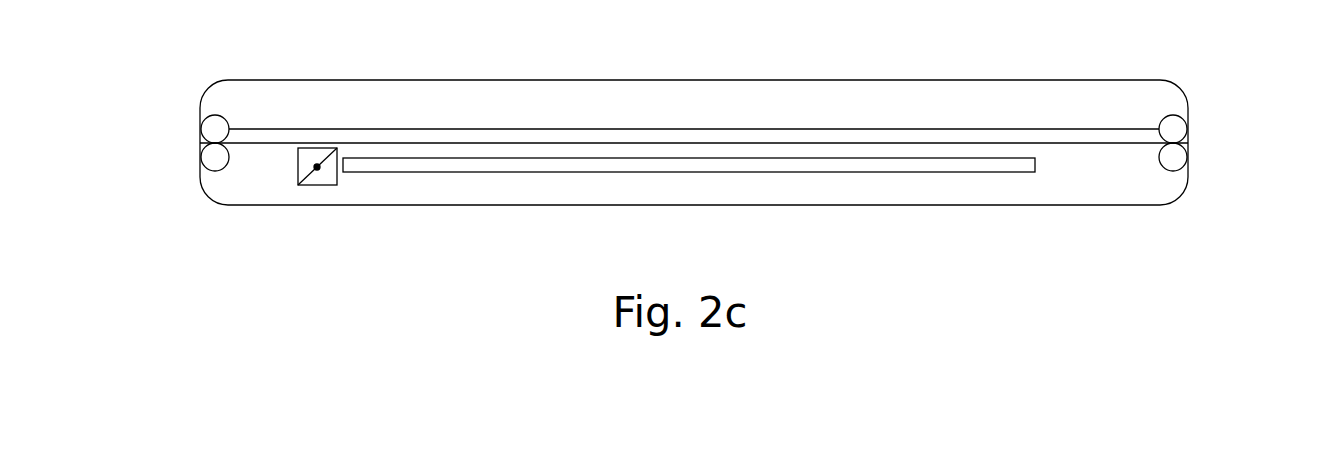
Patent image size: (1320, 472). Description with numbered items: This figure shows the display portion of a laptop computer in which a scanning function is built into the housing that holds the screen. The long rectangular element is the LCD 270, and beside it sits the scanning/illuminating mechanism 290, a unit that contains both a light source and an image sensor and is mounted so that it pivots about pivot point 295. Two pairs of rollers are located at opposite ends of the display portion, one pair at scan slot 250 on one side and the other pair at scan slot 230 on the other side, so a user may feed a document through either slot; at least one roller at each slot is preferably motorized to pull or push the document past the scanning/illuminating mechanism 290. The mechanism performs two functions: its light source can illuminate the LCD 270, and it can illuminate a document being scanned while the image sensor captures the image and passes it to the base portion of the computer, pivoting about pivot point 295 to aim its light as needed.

The scan slot 230 is at (1202, 144).
The scan slot 250 is at (186, 142).
The LCD 270 is at (551, 182).
The scanning/illuminating mechanism 290 is at (338, 200).
The pivot point 295 is at (312, 183).